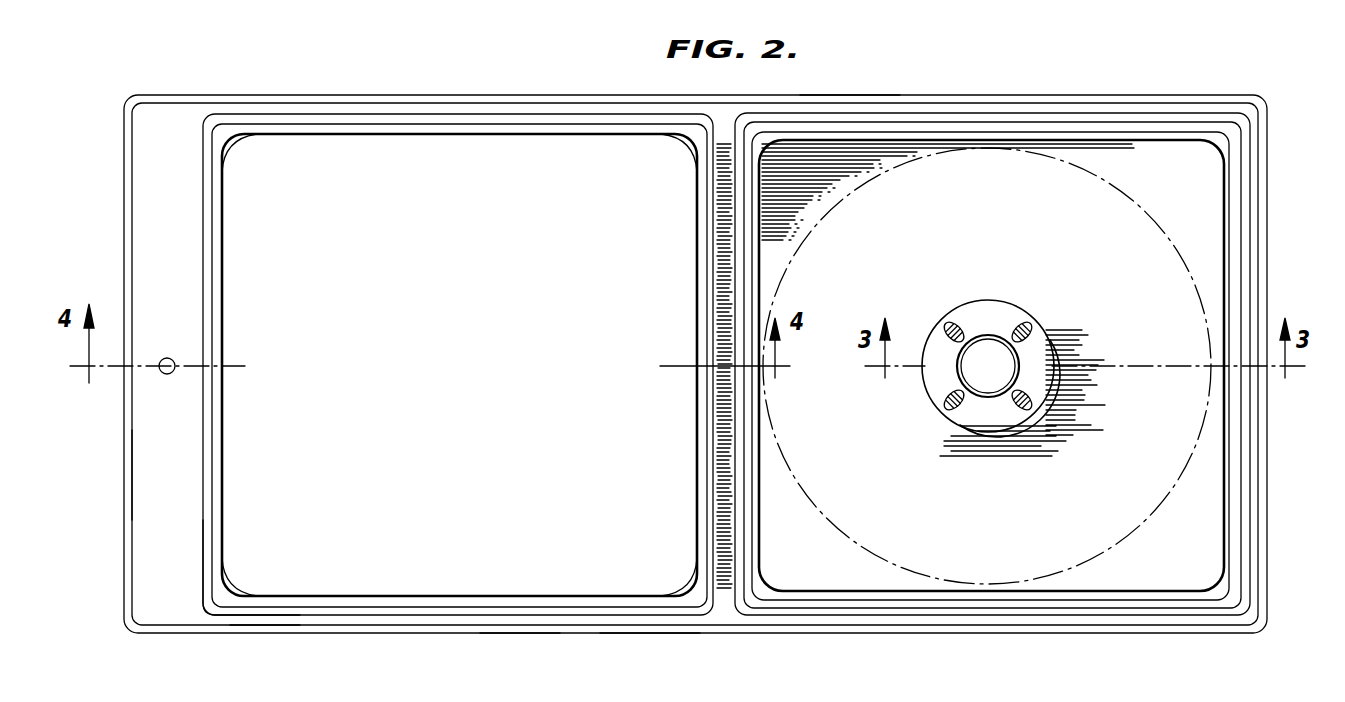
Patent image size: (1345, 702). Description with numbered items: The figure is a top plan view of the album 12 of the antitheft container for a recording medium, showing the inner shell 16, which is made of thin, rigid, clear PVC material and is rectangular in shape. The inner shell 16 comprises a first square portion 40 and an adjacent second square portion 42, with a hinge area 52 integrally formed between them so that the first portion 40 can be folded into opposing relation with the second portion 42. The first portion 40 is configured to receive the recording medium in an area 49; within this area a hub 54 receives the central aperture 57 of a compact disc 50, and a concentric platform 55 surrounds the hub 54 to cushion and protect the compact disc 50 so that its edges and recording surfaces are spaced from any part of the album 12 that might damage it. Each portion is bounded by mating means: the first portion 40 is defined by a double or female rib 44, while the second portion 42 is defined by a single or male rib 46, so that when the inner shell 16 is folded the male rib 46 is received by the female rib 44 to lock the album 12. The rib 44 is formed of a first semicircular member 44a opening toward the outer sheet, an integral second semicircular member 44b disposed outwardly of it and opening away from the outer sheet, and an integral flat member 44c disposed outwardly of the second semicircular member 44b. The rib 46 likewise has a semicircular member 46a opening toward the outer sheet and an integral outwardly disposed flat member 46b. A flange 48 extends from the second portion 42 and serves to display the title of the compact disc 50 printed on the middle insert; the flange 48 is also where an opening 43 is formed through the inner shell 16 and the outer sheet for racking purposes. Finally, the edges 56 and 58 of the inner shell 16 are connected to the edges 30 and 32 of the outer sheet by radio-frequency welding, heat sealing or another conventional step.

The album 12 is at (685, 672).
The inner shell 16 is at (513, 652).
The edge of outer sheet 30 is at (160, 634).
The edge of outer sheet 32 is at (178, 95).
The first square portion 40 is at (1135, 142).
The second square portion 42 is at (285, 142).
The opening 43 is at (168, 358).
The rib 44 is at (1256, 180).
The first semicircular member 44a is at (1210, 150).
The second semicircular member 44b is at (1230, 137).
The flat member 44c is at (1264, 108).
The rib 46 is at (457, 108).
The semicircular member 46a is at (223, 528).
The flat member 46b is at (205, 560).
The flange 48 is at (128, 473).
The area 49 is at (1000, 482).
The compact disc 50 is at (1118, 556).
The hinge area 52 is at (720, 605).
The hub 54 is at (978, 346).
The concentric platform 55 is at (1052, 385).
The edge of inner shell 56 is at (258, 633).
The central aperture 57 is at (1040, 342).
The edge of inner shell 58 is at (848, 95).